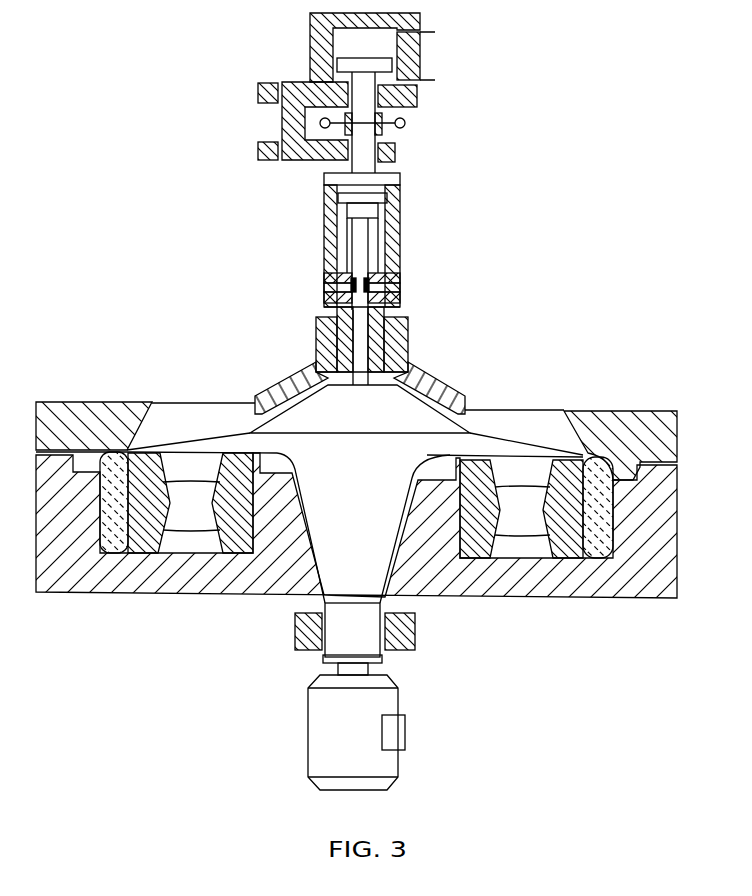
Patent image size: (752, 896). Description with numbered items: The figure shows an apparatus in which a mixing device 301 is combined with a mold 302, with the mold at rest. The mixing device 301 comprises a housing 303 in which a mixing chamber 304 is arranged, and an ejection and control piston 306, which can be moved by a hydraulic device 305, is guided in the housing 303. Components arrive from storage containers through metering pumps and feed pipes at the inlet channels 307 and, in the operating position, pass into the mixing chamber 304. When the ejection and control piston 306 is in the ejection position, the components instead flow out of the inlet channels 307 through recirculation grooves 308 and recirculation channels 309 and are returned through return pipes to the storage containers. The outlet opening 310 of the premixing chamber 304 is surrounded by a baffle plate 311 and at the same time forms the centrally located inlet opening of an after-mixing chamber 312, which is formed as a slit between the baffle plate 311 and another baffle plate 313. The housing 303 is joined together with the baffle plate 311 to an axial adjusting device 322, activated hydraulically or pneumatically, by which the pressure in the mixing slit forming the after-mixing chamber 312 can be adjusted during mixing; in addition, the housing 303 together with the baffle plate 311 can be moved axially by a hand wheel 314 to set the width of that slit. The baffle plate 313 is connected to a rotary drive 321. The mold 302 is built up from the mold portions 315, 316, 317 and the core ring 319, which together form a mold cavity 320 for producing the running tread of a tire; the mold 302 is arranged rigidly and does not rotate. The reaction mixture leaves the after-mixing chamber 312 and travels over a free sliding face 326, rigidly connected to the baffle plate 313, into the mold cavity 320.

The mixing device 301 is at (403, 239).
The mold 302 is at (599, 410).
The housing 303 is at (326, 190).
The mixing chamber 304 is at (362, 330).
The hydraulic device 305 is at (386, 230).
The ejection and control piston 306 is at (356, 228).
The inlet channels 307 is at (326, 305).
The recirculation grooves 308 is at (327, 274).
The recirculation channels 309 is at (330, 287).
The outlet opening 310 is at (326, 360).
The baffle plate 311 is at (277, 392).
The after-mixing chamber 312 is at (405, 385).
The baffle plate 313 is at (453, 392).
The hand wheel 314 is at (384, 131).
The mold portion 315 is at (513, 578).
The mold portion 316 is at (72, 556).
The mold portion 317 is at (90, 405).
The core ring 319 is at (568, 552).
The mold cavity 320 is at (597, 552).
The rotary drive 321 is at (315, 708).
The axial adjusting device 322 is at (423, 59).
The free sliding face 326 is at (509, 440).